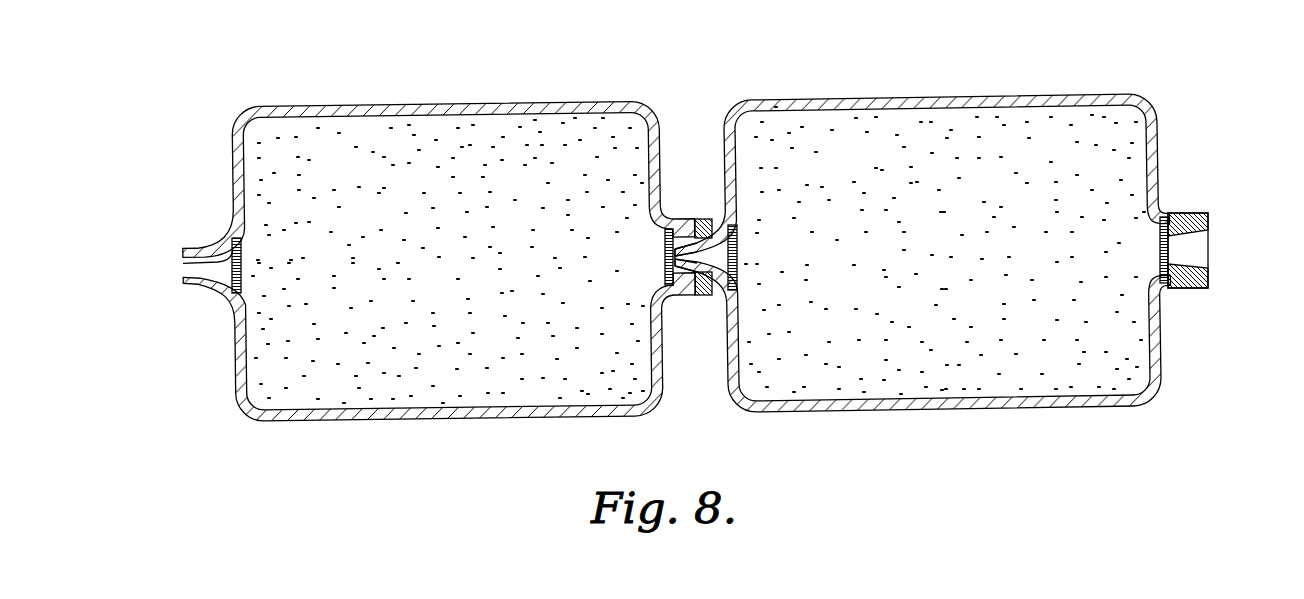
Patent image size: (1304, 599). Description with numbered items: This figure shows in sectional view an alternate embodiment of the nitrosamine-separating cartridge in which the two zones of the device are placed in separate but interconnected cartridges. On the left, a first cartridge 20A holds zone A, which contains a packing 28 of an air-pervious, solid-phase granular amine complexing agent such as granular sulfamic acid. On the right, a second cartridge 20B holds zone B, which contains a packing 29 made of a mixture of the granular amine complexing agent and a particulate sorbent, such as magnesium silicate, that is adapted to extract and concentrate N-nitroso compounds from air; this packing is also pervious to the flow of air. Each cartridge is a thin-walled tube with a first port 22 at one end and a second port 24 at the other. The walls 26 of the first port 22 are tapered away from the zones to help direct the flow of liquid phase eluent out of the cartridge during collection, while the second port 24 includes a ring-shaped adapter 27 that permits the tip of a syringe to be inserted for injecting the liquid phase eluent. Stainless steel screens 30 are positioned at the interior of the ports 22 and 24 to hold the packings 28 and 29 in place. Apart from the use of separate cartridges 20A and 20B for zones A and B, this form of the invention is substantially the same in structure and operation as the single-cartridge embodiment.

The first cartridge 20A is at (553, 419).
The second cartridge 20B is at (1053, 411).
The first port 22 is at (176, 271).
The second port 24 is at (700, 300).
The walls of port 26 is at (207, 289).
The ring-shaped adapter 27 is at (708, 218).
The packing 28 is at (354, 181).
The packing 29 is at (855, 172).
The stainless steel screens 30 is at (182, 261).
The zone A is at (289, 131).
The zone B is at (793, 122).